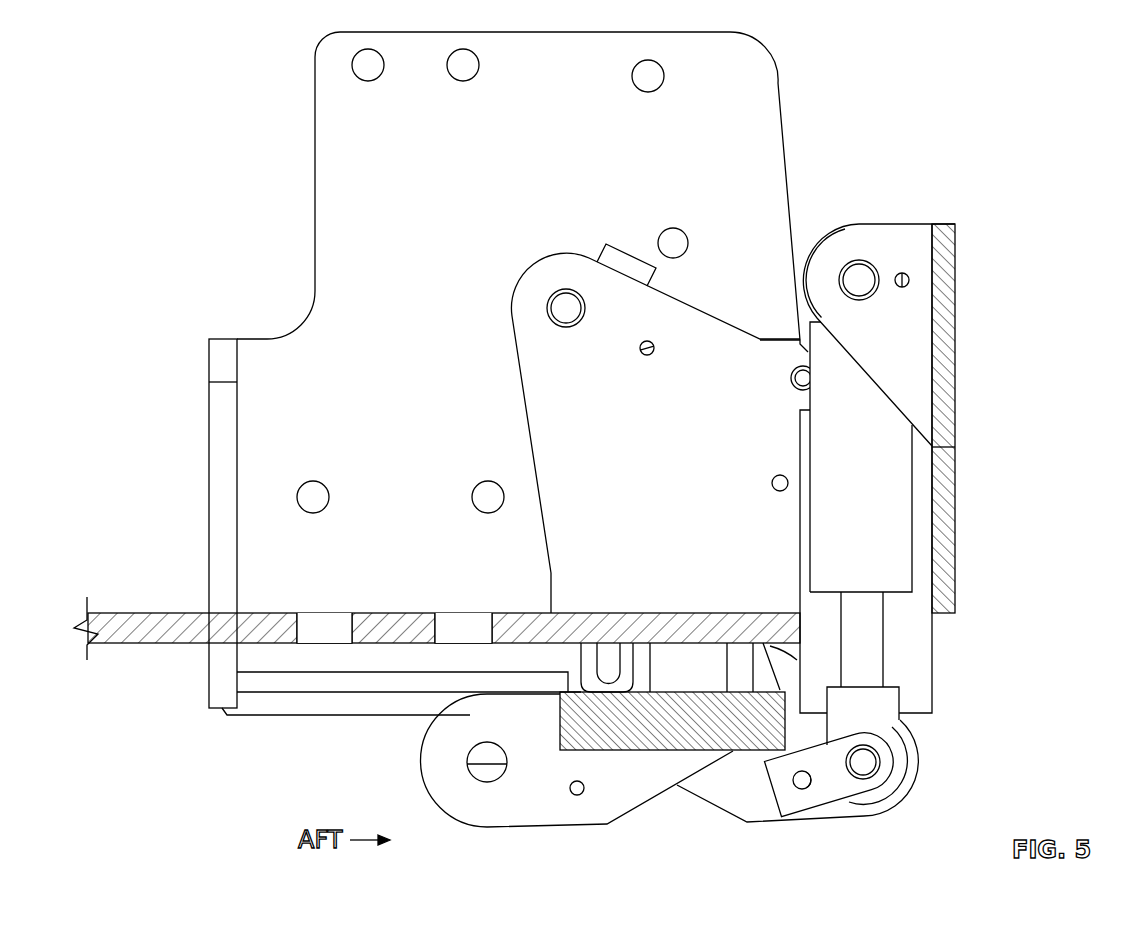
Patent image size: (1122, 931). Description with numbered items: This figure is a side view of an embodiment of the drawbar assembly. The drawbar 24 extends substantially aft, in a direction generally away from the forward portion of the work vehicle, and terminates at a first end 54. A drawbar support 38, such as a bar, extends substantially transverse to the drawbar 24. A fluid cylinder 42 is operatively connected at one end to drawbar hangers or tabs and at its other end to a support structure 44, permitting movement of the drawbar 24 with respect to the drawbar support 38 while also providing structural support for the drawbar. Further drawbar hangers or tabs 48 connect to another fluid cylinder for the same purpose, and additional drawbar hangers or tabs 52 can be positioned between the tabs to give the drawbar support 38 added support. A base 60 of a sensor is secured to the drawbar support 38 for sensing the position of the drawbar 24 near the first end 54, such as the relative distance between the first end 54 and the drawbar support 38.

The drawbar 24 is at (147, 614).
The drawbar support 38 is at (633, 750).
The fluid cylinder 42 is at (912, 513).
The support structure 44 is at (905, 224).
The drawbar hangers or tabs 48 is at (913, 790).
The drawbar hangers or tabs 52 is at (422, 770).
The first end 54 is at (802, 623).
The base 60 is at (580, 655).